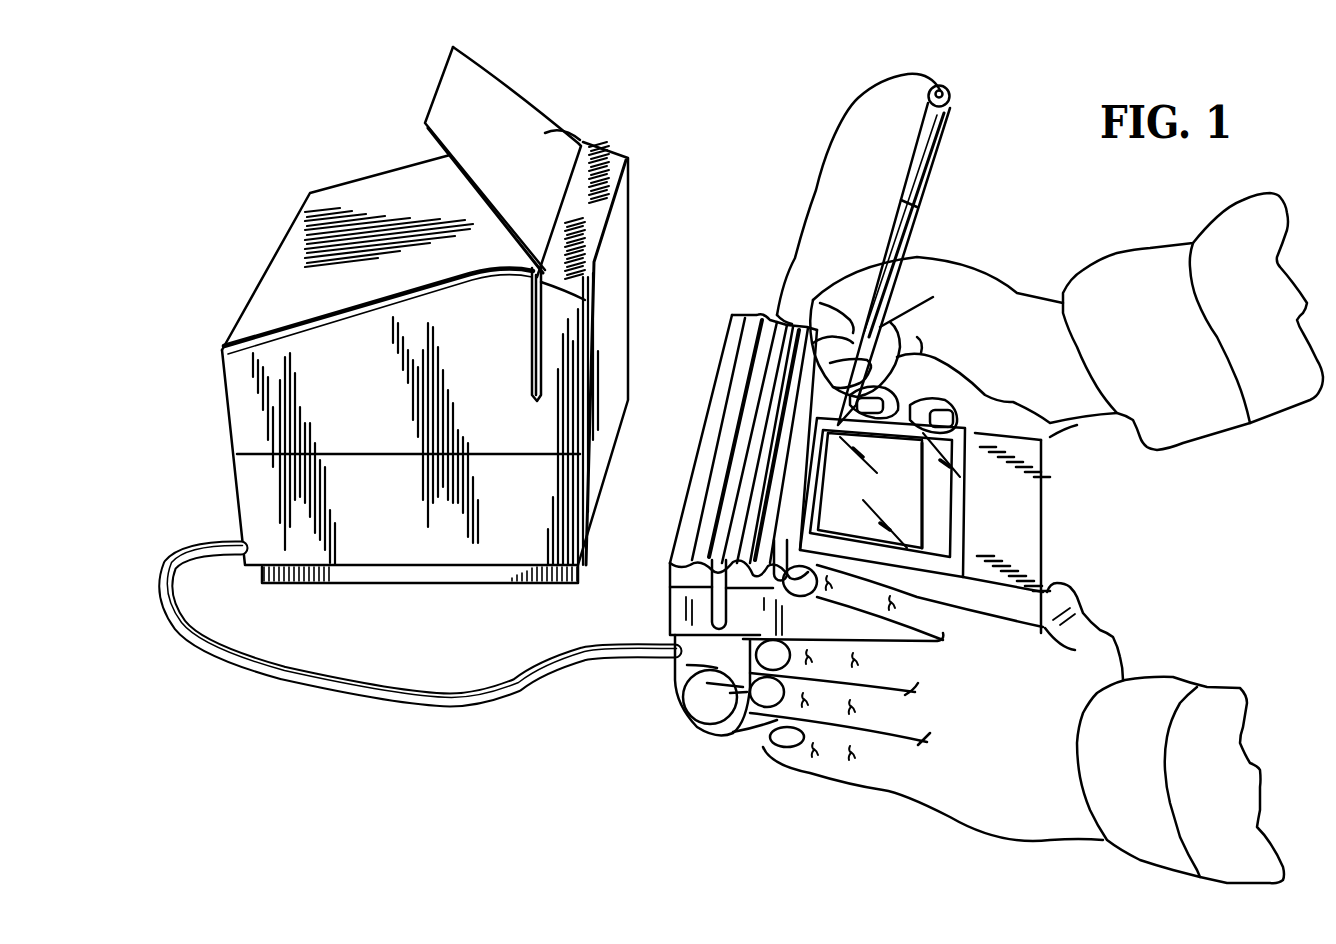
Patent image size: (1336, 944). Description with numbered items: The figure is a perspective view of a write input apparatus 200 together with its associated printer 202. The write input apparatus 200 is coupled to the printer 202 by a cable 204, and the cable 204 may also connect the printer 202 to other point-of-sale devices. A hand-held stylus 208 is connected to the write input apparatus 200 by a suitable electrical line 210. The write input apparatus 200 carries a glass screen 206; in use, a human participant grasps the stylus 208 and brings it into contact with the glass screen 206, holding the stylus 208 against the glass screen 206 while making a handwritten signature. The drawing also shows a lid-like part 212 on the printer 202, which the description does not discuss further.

The write input apparatus 200 is at (1046, 497).
The printer 202 is at (282, 245).
The cable 204 is at (373, 688).
The glass screen 206 is at (905, 516).
The hand-held stylus 208 is at (938, 150).
The electrical line 210 is at (823, 150).
The lid / cover 212 is at (510, 98).